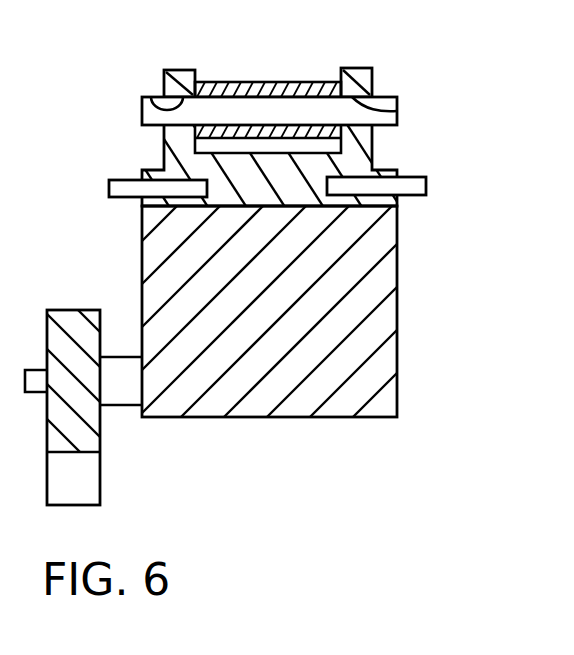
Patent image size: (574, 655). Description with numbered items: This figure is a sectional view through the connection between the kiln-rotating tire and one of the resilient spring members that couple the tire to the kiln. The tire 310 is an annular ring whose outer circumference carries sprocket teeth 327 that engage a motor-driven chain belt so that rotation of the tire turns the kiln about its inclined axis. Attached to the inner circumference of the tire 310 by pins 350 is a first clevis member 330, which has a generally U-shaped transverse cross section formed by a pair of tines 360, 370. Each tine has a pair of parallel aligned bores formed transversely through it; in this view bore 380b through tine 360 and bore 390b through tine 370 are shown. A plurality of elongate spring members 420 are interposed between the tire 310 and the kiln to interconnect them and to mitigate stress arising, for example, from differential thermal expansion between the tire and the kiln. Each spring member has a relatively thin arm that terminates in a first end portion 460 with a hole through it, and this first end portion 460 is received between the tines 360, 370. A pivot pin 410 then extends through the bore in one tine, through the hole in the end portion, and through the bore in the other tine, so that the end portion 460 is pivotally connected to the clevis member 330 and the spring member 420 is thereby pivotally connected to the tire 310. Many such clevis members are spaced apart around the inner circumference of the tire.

The tire 310 is at (142, 292).
The sprocket teeth 327 is at (88, 480).
The first clevis member 330 is at (162, 141).
The pins 350 is at (110, 190).
The tine 360 is at (176, 70).
The tine 370 is at (355, 67).
The bore 380b is at (150, 95).
The bore 390b is at (397, 111).
The second pivot pin 410 is at (142, 112).
The spring member 420 is at (312, 82).
The first end portion 460 is at (226, 82).